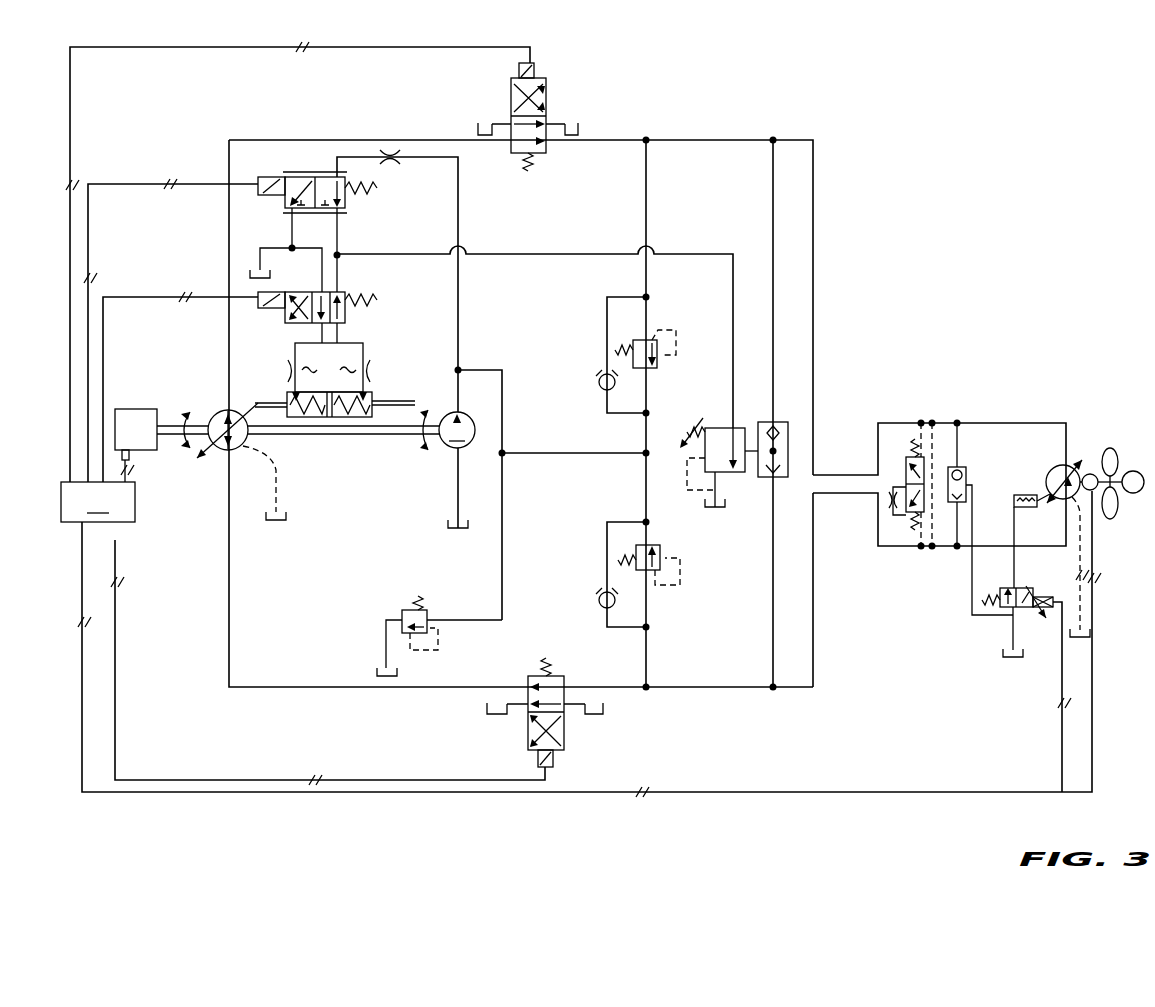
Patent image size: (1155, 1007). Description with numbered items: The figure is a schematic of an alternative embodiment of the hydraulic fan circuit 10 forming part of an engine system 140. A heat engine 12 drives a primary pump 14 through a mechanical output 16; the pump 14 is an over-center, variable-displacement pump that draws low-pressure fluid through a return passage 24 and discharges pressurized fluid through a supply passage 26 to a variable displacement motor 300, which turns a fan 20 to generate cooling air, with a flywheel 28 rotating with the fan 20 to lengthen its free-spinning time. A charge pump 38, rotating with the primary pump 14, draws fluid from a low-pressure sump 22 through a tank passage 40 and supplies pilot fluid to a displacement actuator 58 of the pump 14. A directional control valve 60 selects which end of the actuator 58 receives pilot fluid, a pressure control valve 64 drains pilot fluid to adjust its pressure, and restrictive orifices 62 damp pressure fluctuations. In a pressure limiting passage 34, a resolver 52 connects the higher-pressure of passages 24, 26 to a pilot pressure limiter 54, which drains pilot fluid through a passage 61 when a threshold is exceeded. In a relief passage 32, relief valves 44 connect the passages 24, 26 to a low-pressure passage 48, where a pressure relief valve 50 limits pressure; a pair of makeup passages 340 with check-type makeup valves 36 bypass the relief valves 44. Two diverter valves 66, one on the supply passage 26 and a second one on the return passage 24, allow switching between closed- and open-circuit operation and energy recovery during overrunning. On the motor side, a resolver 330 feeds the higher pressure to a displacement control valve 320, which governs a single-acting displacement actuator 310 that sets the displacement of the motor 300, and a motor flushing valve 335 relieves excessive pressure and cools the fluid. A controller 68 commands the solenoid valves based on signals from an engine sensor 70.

The hydraulic fan circuit 10 is at (984, 176).
The heat engine 12 is at (138, 409).
The primary pump 14 is at (220, 412).
The mechanical output 16 is at (183, 414).
The fan 20 is at (1108, 448).
The low-pressure sump 22 is at (272, 276).
The return passage 24 is at (229, 606).
The supply passage 26 is at (229, 232).
The flywheel 28 is at (1140, 472).
The relief passage 32 is at (646, 190).
The pressure limiting passage 34 is at (773, 206).
The makeup valve 36 is at (600, 380).
The charge pump 38 is at (447, 410).
The tank passage 40 is at (455, 484).
The relief valve 44 is at (660, 360).
The low-pressure passage 48 is at (502, 552).
The pressure relief valve 50 is at (424, 600).
The resolver 52 is at (778, 422).
The pilot pressure limiter 54 is at (718, 432).
The displacement actuator 58 is at (380, 398).
The directional control valve 60 is at (350, 298).
The passage 61 is at (733, 254).
The restrictive orifice 62 is at (398, 164).
The pressure control valve 64 is at (300, 172).
The diverter valve 66 is at (522, 158).
The controller 68 is at (98, 502).
The engine sensor 70 is at (131, 455).
The engine system 140 is at (74, 792).
The variable displacement motor 300 is at (1057, 472).
The displacement actuator 310 is at (1016, 495).
The displacement control valve 320 is at (1030, 590).
The resolver 330 is at (970, 466).
The motor flushing valve 335 is at (903, 460).
The makeup passage 340 is at (600, 308).